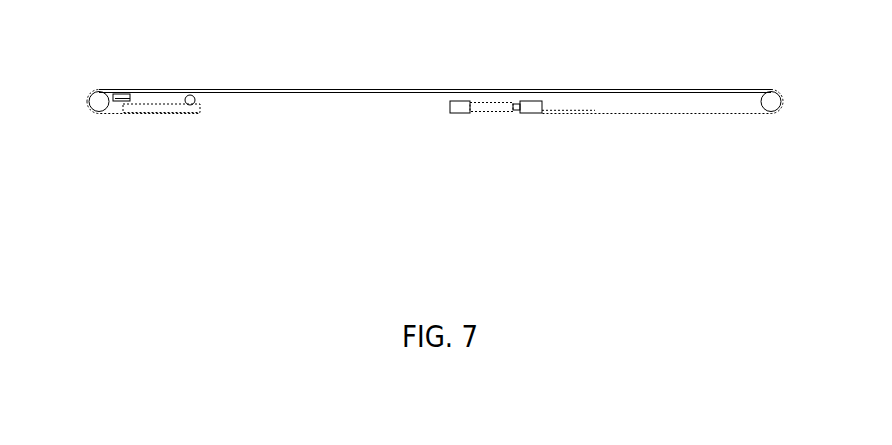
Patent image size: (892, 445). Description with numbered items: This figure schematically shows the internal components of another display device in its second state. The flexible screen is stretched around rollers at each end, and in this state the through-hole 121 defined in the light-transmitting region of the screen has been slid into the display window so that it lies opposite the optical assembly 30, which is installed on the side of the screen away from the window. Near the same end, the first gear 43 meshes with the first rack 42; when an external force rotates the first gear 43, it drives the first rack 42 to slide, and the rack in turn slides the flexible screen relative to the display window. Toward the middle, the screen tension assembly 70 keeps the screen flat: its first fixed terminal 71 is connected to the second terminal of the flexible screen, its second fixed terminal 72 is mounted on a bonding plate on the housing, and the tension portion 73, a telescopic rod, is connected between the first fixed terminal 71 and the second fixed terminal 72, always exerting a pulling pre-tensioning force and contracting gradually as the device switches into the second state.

The through-hole 121 is at (125, 93).
The optical assembly 30 is at (131, 98).
The first gear 43 is at (193, 95).
The first rack 42 is at (197, 114).
The screen tension assembly 70 is at (515, 149).
The first fixed terminal 71 is at (550, 127).
The second fixed terminal 72 is at (458, 113).
The tension portion 73 is at (487, 113).